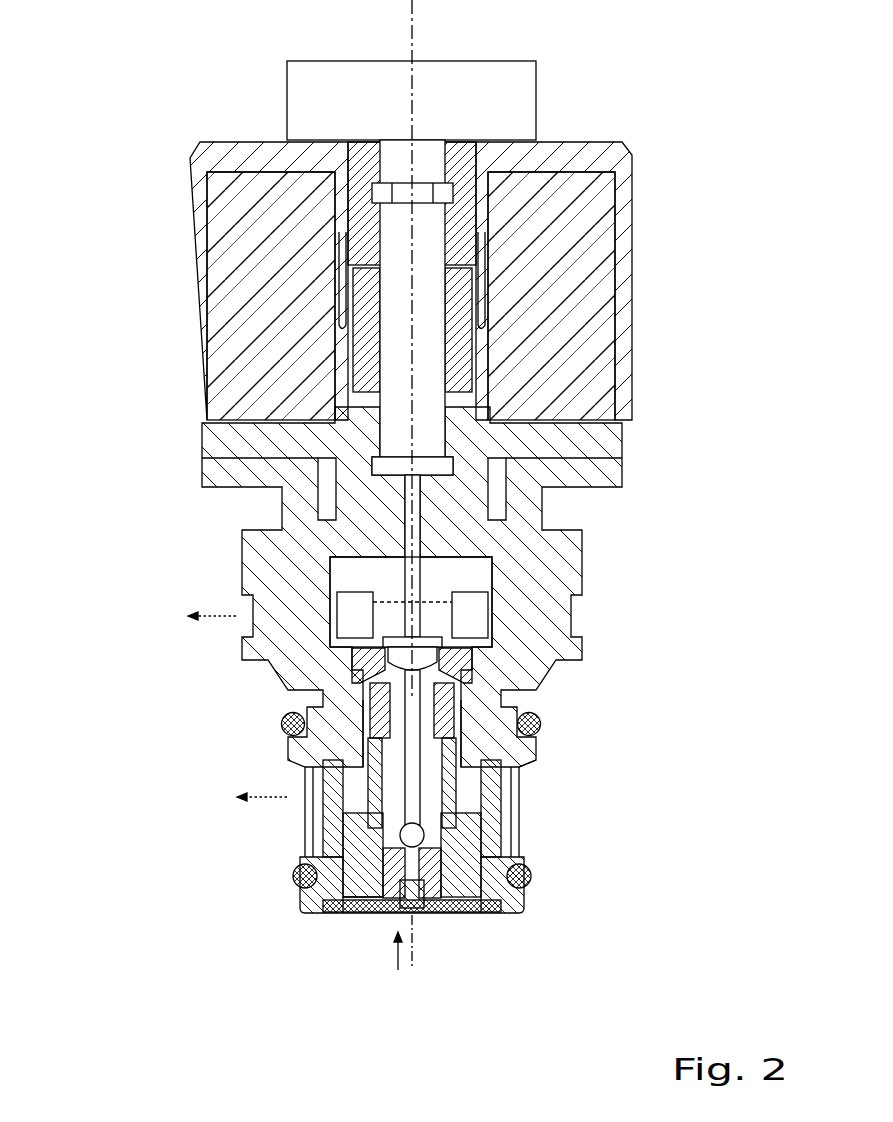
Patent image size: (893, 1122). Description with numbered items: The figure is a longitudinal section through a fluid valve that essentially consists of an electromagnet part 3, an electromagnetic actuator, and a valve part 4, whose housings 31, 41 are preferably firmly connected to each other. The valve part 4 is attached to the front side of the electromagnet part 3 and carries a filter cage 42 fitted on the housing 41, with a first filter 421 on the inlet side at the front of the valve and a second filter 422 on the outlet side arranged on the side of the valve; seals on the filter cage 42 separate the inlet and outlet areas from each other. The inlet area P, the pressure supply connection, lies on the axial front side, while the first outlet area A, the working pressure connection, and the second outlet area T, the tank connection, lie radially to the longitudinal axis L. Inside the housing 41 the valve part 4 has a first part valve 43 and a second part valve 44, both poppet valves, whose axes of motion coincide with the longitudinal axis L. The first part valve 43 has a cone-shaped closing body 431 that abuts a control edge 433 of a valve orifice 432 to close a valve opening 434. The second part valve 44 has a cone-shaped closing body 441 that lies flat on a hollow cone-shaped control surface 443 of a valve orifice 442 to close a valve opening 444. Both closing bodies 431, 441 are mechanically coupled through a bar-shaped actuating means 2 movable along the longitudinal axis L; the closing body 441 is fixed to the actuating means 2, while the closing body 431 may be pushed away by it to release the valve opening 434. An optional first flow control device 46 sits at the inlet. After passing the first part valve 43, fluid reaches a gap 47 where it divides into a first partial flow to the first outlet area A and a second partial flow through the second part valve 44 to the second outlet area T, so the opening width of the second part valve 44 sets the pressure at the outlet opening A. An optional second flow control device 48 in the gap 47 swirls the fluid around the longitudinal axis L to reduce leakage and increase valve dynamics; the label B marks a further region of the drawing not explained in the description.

The actuating means 2 is at (425, 575).
The electromagnet part 3 is at (53, 44).
The housing 31 is at (184, 136).
The valve part 4 is at (53, 464).
The housing 41 is at (262, 560).
The filter cage 42 is at (300, 916).
The first filter 421 is at (355, 915).
The second filter 422 is at (306, 817).
The first part valve 43 is at (522, 826).
The closing body 431 is at (298, 916).
The valve orifice 432 is at (458, 874).
The control edge 433 is at (303, 803).
The valve opening 434 is at (300, 773).
The second part valve 44 is at (468, 612).
The closing body 441 is at (472, 748).
The valve orifice 442 is at (445, 648).
The control surface 443 is at (472, 698).
The valve opening 444 is at (365, 660).
The first flow control device 46 is at (483, 915).
The gap 47 is at (284, 728).
The second flow control device 48 is at (538, 769).
The first outlet area A is at (302, 806).
The working port B is at (335, 540).
The second outlet area T is at (328, 603).
The inlet area P is at (388, 913).
The longitudinal axis L is at (424, 915).